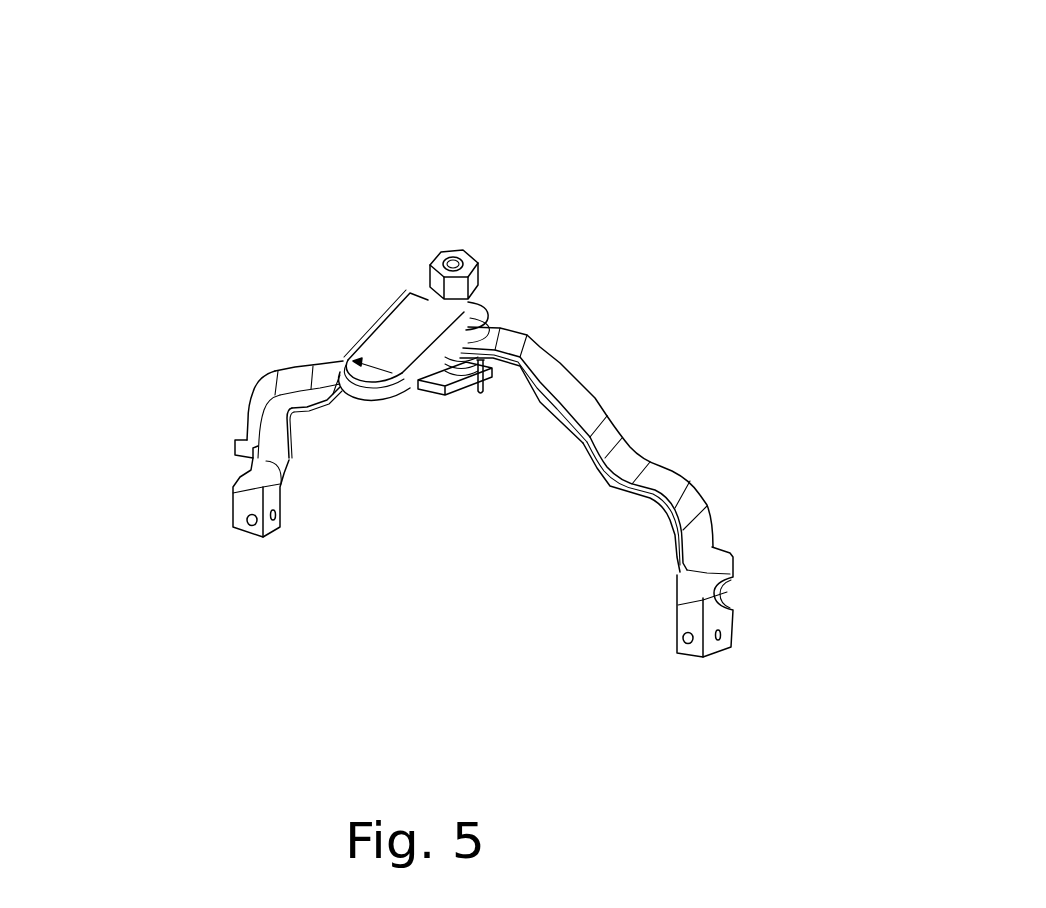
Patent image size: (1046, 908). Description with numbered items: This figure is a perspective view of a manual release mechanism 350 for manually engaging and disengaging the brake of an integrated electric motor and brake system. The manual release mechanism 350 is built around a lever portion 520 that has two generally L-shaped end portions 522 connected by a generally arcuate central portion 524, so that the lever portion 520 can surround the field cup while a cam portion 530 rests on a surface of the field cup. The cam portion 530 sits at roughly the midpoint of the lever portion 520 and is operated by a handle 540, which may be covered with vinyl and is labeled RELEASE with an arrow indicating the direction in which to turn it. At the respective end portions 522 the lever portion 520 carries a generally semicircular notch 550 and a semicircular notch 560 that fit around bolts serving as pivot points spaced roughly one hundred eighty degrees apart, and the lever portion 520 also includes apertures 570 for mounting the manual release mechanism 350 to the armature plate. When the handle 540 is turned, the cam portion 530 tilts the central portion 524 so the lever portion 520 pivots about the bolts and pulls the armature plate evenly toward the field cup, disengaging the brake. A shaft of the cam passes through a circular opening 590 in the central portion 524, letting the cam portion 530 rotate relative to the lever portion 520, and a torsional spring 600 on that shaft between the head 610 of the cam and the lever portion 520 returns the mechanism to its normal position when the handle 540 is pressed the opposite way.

The manual release mechanism 350 is at (492, 123).
The lever portion 520 is at (638, 382).
The end portions 522 is at (226, 389).
The central portion 524 is at (552, 312).
The cam portion 530 is at (399, 407).
The handle 540 is at (407, 323).
The semicircular notch 550 is at (688, 598).
The semicircular notch 560 is at (250, 481).
The apertures 570 is at (250, 524).
The circular opening 590 is at (484, 291).
The torsional spring 600 is at (480, 375).
The head 610 is at (452, 389).